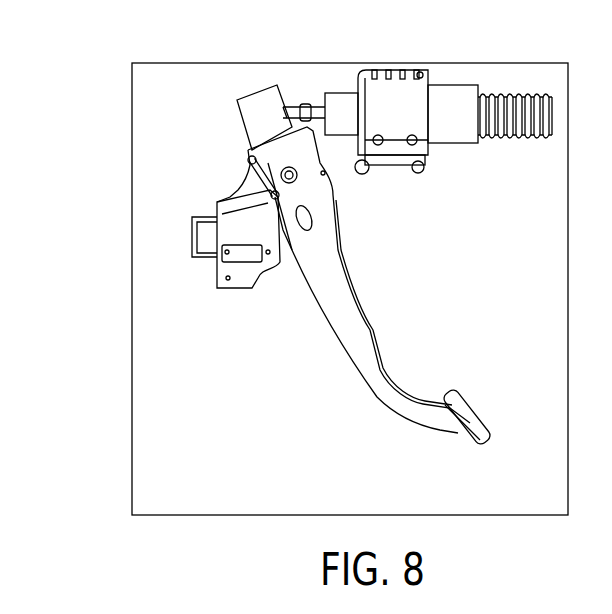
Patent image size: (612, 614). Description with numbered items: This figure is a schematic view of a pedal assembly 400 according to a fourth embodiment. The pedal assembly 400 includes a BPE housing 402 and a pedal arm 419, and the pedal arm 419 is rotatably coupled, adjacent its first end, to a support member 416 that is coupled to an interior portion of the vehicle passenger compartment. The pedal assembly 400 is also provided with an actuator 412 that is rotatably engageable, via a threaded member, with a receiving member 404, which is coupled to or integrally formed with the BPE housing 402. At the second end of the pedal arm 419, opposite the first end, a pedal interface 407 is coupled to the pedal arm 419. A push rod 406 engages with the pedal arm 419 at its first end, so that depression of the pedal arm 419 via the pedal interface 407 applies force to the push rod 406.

The pedal assembly 400 is at (80, 108).
The BPE housing 402 is at (395, 100).
The receiving member 404 is at (455, 135).
The push rod 406 is at (305, 112).
The pedal interface 407 is at (475, 422).
The actuator 412 is at (508, 117).
The support member 416 is at (237, 252).
The pedal arm 419 is at (323, 308).